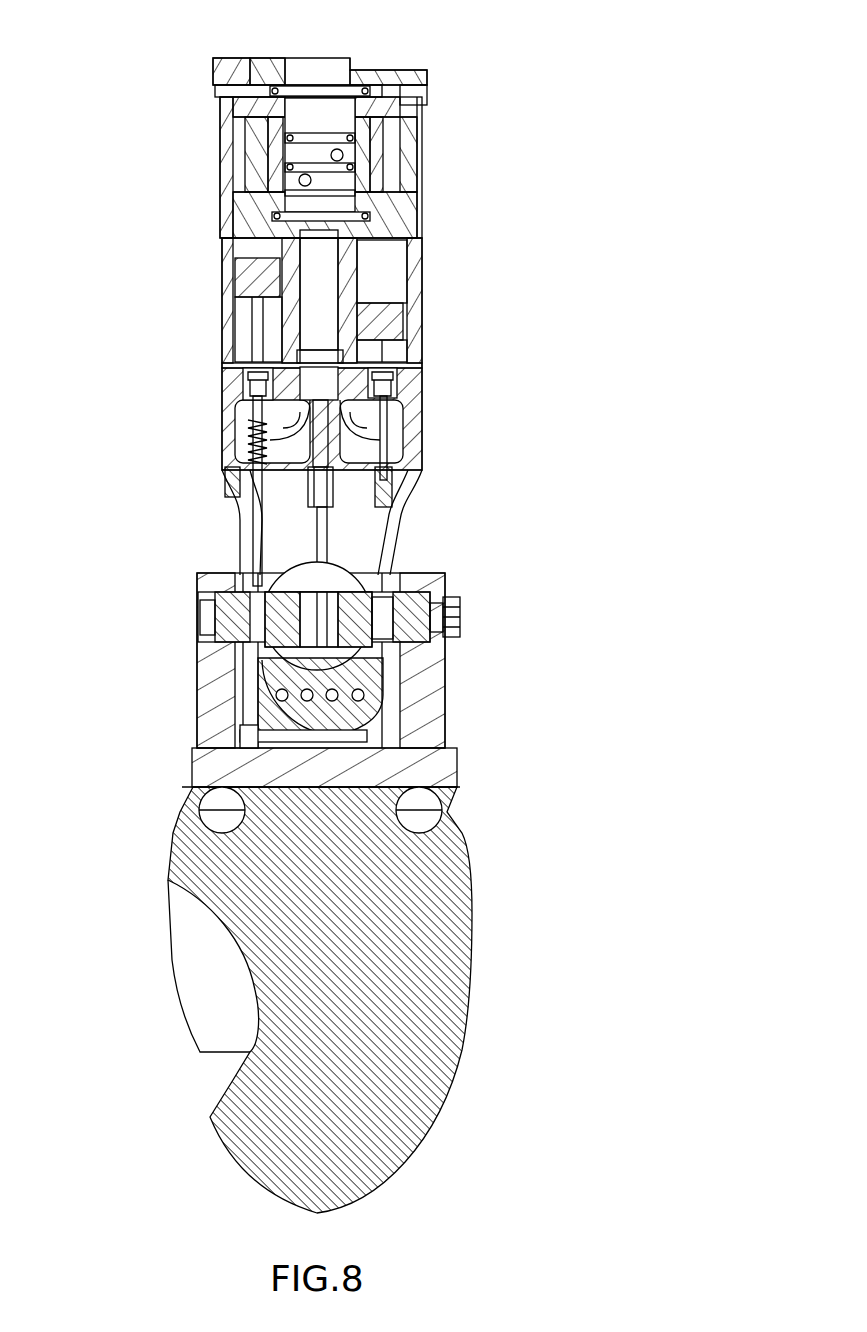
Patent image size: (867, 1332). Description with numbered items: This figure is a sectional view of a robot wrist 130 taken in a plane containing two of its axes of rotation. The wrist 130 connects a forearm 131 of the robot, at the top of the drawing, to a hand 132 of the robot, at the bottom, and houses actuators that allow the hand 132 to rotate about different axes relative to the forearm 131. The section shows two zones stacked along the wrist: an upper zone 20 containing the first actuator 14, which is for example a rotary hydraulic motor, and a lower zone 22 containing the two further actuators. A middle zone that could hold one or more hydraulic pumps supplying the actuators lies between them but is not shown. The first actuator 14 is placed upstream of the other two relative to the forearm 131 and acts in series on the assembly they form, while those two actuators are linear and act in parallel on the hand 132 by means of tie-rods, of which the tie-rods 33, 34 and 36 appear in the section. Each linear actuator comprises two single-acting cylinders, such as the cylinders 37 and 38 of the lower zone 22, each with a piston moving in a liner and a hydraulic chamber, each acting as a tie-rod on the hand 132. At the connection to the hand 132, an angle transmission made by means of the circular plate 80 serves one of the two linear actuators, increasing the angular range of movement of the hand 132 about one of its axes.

The forearm 131 is at (244, 64).
The upper zone 20 is at (57, 56).
The first actuator 14 is at (440, 148).
The lower zone 22 is at (57, 193).
The cylinder 37 is at (207, 307).
The cylinder 38 is at (440, 292).
The tie-rod 33 is at (226, 500).
The tie-rod 34 is at (322, 522).
The tie-rod 36 is at (418, 513).
The wrist 130 is at (600, 552).
The circular plate 80 is at (382, 682).
The hand 132 is at (423, 917).